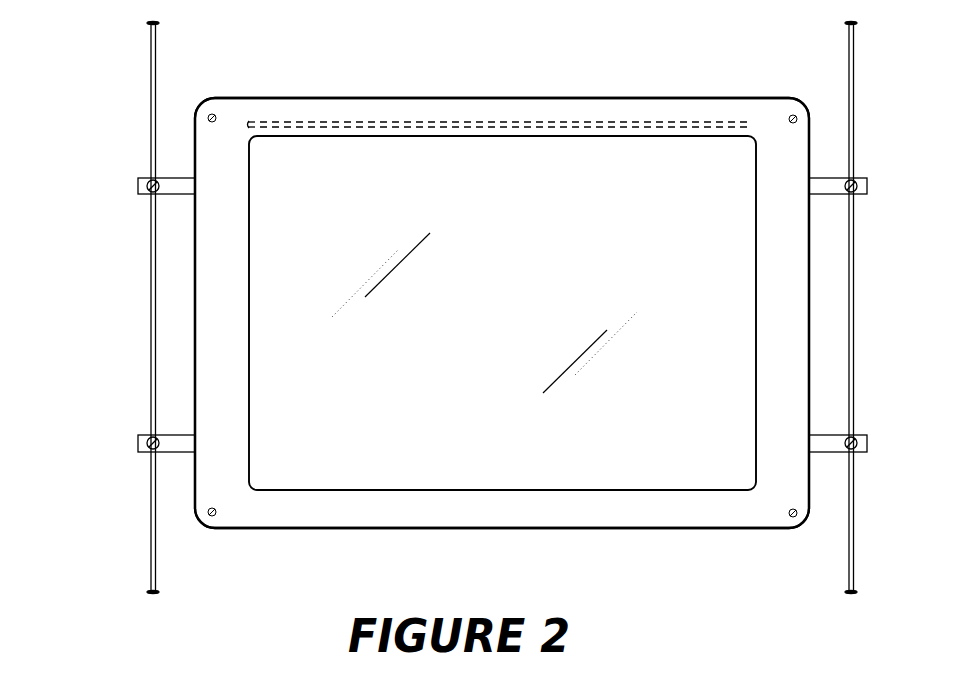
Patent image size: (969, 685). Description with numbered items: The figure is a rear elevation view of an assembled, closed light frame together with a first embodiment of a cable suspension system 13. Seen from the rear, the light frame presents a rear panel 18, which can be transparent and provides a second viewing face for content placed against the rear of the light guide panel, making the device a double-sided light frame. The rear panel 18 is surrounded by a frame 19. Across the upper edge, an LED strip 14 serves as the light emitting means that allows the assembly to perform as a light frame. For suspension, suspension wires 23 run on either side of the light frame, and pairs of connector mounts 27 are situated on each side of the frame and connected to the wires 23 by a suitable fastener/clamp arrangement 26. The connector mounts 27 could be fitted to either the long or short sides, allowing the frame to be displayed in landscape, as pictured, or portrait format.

The cable suspension system 13 is at (104, 116).
The LED strip 14 is at (662, 122).
The rear panel 18 is at (502, 313).
The frame 19 is at (648, 515).
The suspension wires 23 is at (150, 328).
The fastener/clamp arrangement 26 is at (148, 190).
The connector mounts 27 is at (185, 183).